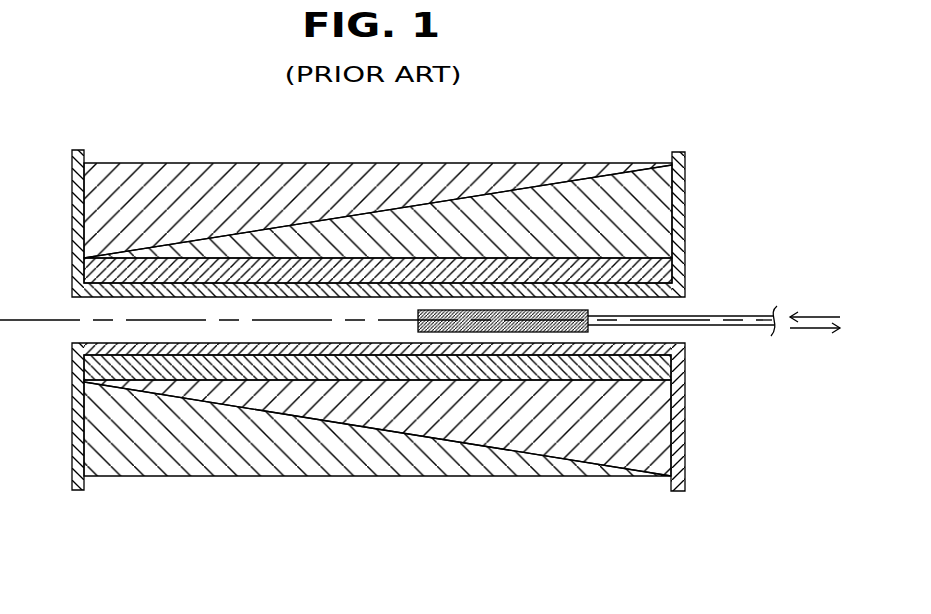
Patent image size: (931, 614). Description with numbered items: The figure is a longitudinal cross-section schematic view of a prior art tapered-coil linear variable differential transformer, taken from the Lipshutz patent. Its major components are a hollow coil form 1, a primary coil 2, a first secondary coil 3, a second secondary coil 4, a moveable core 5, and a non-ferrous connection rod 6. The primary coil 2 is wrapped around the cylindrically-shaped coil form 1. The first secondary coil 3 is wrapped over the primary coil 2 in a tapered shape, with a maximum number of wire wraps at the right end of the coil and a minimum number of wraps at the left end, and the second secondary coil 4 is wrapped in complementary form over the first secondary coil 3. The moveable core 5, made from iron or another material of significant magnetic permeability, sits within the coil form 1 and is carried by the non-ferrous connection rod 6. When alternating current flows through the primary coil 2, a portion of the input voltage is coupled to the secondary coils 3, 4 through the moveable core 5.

The hollow coil form 1 is at (678, 218).
The primary coil 2 is at (657, 272).
The first secondary coil 3 is at (598, 202).
The second secondary coil 4 is at (253, 187).
The moveable core 5 is at (588, 330).
The non-ferrous connection rod 6 is at (748, 320).